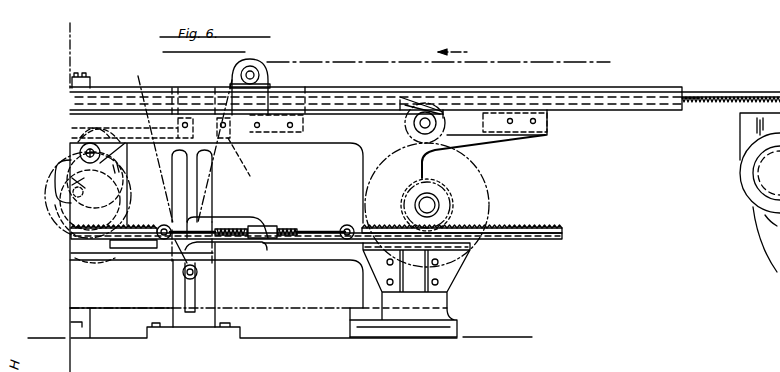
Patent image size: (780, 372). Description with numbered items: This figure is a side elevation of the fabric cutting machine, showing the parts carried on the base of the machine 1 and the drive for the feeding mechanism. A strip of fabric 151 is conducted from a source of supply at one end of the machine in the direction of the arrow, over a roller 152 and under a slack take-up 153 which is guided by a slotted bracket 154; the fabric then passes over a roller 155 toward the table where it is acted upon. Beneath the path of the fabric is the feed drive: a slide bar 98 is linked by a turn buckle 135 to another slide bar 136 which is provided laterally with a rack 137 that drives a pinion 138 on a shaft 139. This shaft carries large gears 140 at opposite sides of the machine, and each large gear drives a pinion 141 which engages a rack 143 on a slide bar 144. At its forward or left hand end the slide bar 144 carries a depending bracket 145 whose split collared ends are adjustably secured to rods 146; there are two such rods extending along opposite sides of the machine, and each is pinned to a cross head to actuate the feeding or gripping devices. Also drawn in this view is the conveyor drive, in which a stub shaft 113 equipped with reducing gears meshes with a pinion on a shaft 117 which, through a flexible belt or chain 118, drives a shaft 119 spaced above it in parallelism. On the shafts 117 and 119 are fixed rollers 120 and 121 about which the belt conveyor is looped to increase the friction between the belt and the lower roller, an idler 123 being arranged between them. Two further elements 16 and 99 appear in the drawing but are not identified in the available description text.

The base of the machine 1 is at (128, 333).
The wheel housing 16 is at (768, 223).
The slide bar 98 is at (133, 262).
The roller 99 is at (163, 226).
The stub shaft 113 is at (63, 203).
The shaft 117 is at (68, 222).
The flexible belt or chain 118 is at (55, 172).
The shaft 119 is at (80, 153).
The roller 120 is at (97, 270).
The roller 121 is at (118, 172).
The idler 123 is at (72, 183).
The turn buckle 135 is at (250, 217).
The slide bar 136 is at (535, 238).
The rack 137 is at (557, 208).
The pinion 138 is at (450, 213).
The shaft 139 is at (435, 200).
The large gear 140 is at (470, 160).
The pinion 141 is at (405, 130).
The rack 143 is at (702, 105).
The slide bar 144 is at (738, 82).
The depending bracket 145 is at (193, 117).
The rod 146 is at (251, 159).
The strip of fabric 151 is at (513, 59).
The roller 152 is at (266, 74).
The slack take-up 153 is at (217, 272).
The slotted bracket 154 is at (207, 293).
The roller 155 is at (144, 142).